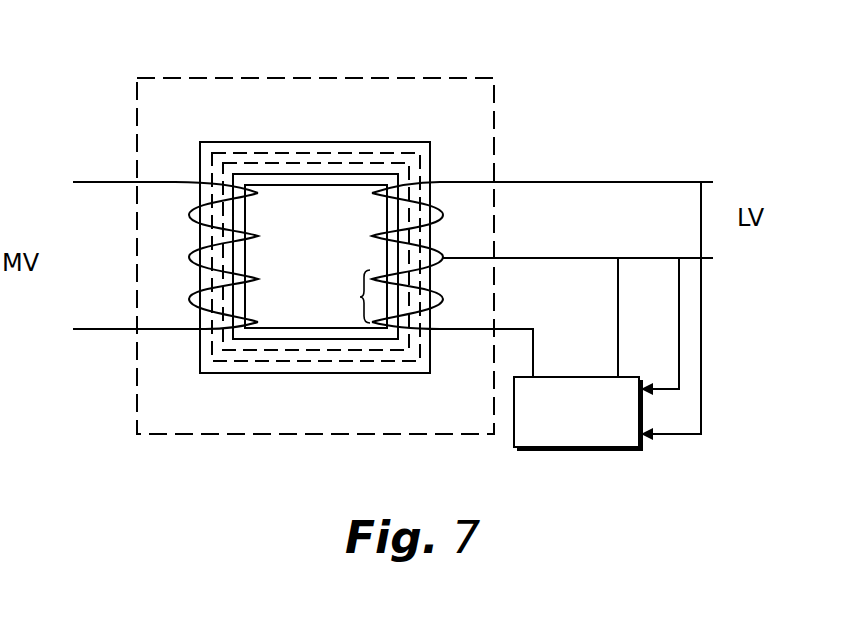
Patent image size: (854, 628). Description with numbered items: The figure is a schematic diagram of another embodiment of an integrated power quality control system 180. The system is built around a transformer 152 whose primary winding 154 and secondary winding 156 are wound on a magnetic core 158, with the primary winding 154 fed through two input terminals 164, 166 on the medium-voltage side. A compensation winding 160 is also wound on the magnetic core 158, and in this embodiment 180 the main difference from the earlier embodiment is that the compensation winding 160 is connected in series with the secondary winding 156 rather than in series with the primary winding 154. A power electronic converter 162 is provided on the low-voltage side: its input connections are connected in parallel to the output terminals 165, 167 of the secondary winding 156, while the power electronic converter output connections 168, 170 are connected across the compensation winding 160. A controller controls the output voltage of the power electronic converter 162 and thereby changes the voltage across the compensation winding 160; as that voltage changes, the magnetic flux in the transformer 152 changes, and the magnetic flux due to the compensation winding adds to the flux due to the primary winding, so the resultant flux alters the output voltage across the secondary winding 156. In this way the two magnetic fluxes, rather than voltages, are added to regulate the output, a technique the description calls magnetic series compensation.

The integrated power quality control system 180 is at (542, 25).
The transformer 152 is at (168, 78).
The magnetic core 158 is at (269, 146).
The input terminal 164 is at (86, 182).
The input terminal 166 is at (97, 329).
The primary winding 154 is at (255, 278).
The secondary winding 156 is at (379, 239).
The compensation winding 160 is at (342, 296).
The output terminal 165 is at (548, 182).
The output terminal 167 is at (547, 258).
The output connection 168 is at (531, 329).
The output connection 170 is at (619, 318).
The power electronic converter 162 is at (641, 449).